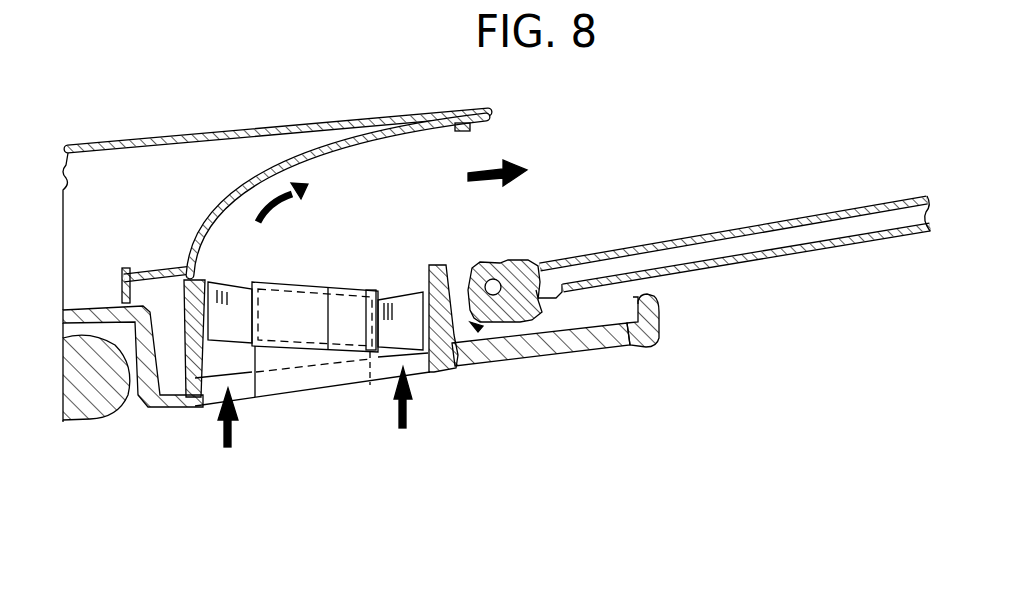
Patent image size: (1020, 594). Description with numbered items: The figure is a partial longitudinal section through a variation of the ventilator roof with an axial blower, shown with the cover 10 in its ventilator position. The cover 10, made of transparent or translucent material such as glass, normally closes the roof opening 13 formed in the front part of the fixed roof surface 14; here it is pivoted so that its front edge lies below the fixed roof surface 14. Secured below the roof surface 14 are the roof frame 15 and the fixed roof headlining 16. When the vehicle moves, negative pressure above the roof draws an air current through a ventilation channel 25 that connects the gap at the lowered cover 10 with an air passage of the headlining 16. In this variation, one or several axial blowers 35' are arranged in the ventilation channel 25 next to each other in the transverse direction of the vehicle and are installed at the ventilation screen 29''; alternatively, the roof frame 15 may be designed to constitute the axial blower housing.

The cover 10 is at (862, 207).
The roof opening 13 is at (656, 130).
The fixed roof surface 14 is at (151, 137).
The ventilation channel 25 is at (366, 190).
The axial blower 35' is at (311, 379).
The ventilation screen 29'' is at (463, 358).
The fixed roof headlining 16 is at (552, 352).
The roof frame 15 is at (608, 335).